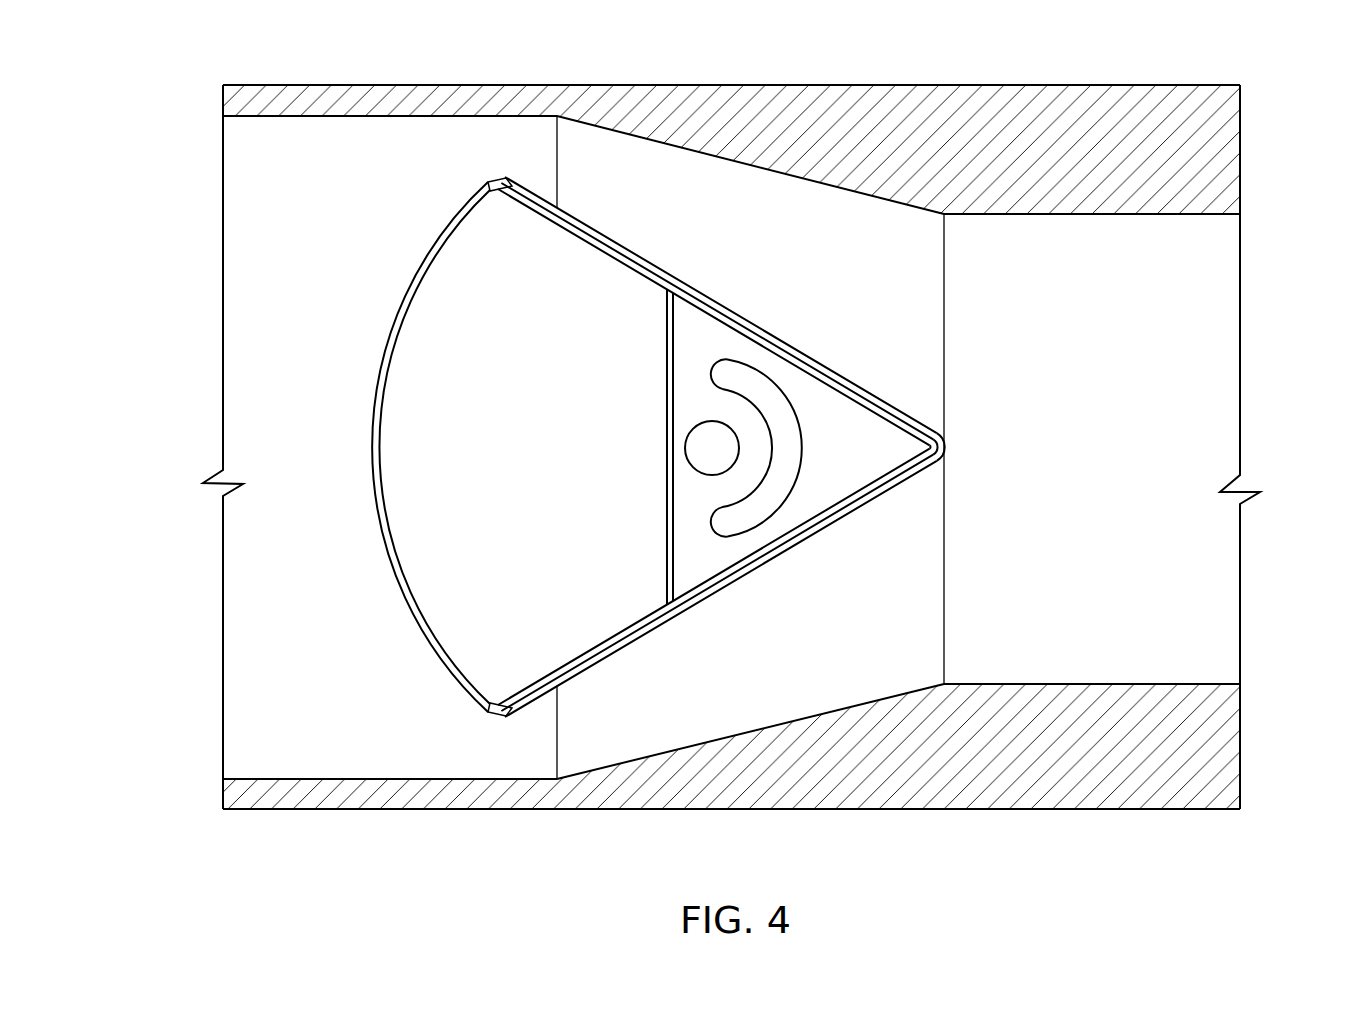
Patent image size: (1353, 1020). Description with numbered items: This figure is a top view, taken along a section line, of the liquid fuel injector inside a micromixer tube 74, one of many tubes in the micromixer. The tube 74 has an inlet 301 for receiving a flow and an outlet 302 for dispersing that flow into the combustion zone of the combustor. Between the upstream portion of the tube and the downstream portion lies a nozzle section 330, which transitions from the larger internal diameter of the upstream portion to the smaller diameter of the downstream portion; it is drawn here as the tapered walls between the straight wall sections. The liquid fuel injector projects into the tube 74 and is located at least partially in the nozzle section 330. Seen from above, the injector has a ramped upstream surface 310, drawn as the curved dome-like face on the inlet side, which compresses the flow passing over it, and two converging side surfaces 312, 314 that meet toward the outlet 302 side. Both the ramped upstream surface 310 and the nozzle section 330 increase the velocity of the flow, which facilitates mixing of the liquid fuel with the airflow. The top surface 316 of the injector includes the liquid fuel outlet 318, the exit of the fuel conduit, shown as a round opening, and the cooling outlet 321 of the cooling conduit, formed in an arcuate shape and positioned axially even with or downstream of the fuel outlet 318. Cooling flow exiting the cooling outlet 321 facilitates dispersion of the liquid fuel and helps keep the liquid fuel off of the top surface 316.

The micromixer tube 74 is at (734, 411).
The nozzle section 330 is at (781, 166).
The inlet 301 is at (240, 451).
The outlet 302 is at (1228, 446).
The ramped upstream surface 310 is at (733, 526).
The liquid fuel outlet 318 is at (450, 470).
The converging side surface 314 is at (860, 373).
The top surface 316 is at (870, 455).
The converging side surface 312 is at (676, 598).
The cooling outlet 321 is at (760, 507).